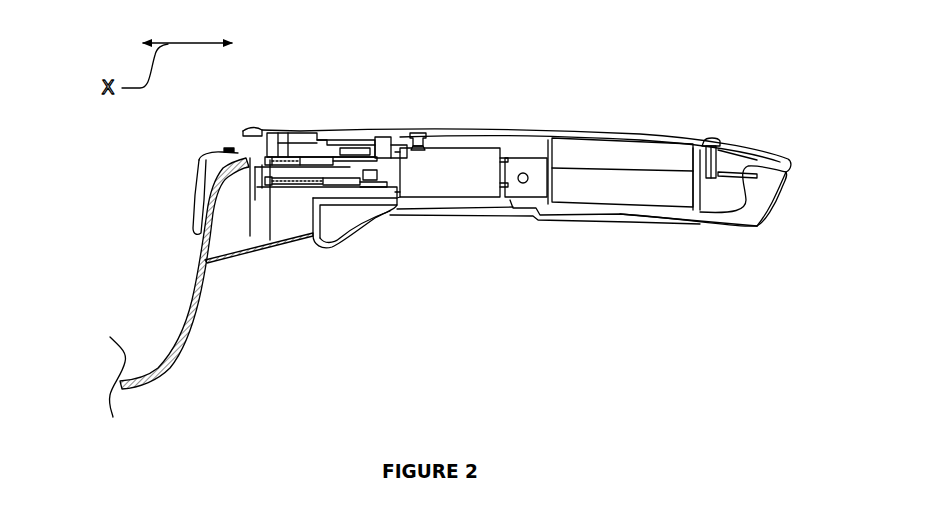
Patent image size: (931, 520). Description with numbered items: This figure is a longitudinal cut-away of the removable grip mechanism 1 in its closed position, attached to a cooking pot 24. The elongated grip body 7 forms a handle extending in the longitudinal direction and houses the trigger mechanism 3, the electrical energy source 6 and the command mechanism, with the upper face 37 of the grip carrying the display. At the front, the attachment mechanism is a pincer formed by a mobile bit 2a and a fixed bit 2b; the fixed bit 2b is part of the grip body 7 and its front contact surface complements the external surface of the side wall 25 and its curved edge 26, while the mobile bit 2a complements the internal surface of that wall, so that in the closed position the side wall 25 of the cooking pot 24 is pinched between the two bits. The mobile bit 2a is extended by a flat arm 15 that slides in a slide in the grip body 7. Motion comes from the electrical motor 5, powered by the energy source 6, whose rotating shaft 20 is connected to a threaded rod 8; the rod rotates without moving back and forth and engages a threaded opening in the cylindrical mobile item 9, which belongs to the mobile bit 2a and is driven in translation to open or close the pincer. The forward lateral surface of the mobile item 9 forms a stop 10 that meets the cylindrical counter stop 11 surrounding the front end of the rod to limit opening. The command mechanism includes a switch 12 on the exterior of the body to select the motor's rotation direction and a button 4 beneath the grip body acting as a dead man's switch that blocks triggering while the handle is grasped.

The removable grip mechanism 1 is at (528, 82).
The mobile bit 2a is at (200, 170).
The fixed bit 2b is at (208, 253).
The trigger mechanism 3 is at (318, 121).
The additional security mechanism 4 is at (397, 220).
The electrical motor 5 is at (453, 194).
The electrical energy source 6 is at (641, 209).
The grip body 7 is at (744, 227).
The threaded rod 8 is at (283, 174).
The mobile item 9 is at (307, 160).
The stop 10 is at (295, 160).
The counter stop 11 is at (270, 160).
The switch 12 is at (372, 131).
The arm 15 is at (252, 157).
The shaft 20 is at (370, 174).
The cooking pot 24 is at (167, 290).
The side wall 25 is at (170, 363).
The curved edge 26 is at (233, 151).
The upper face 37 is at (625, 120).